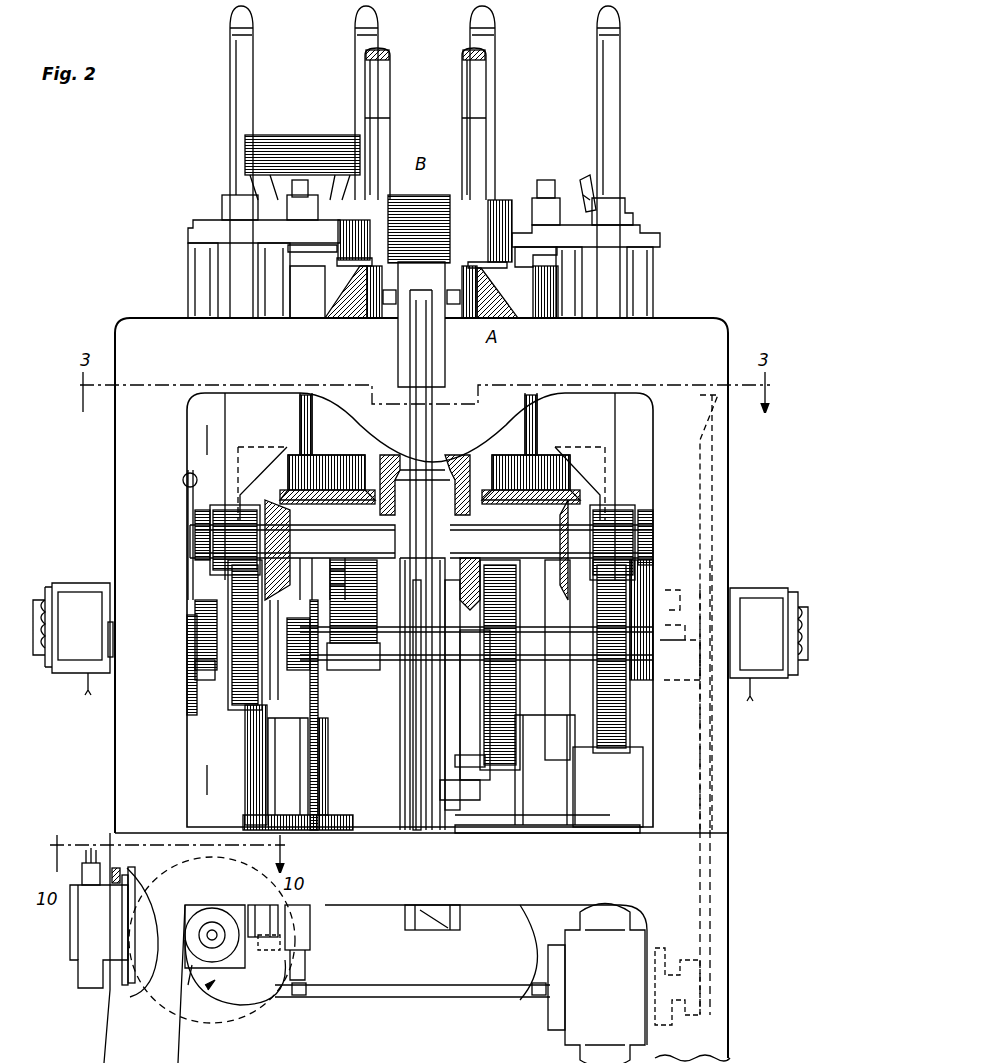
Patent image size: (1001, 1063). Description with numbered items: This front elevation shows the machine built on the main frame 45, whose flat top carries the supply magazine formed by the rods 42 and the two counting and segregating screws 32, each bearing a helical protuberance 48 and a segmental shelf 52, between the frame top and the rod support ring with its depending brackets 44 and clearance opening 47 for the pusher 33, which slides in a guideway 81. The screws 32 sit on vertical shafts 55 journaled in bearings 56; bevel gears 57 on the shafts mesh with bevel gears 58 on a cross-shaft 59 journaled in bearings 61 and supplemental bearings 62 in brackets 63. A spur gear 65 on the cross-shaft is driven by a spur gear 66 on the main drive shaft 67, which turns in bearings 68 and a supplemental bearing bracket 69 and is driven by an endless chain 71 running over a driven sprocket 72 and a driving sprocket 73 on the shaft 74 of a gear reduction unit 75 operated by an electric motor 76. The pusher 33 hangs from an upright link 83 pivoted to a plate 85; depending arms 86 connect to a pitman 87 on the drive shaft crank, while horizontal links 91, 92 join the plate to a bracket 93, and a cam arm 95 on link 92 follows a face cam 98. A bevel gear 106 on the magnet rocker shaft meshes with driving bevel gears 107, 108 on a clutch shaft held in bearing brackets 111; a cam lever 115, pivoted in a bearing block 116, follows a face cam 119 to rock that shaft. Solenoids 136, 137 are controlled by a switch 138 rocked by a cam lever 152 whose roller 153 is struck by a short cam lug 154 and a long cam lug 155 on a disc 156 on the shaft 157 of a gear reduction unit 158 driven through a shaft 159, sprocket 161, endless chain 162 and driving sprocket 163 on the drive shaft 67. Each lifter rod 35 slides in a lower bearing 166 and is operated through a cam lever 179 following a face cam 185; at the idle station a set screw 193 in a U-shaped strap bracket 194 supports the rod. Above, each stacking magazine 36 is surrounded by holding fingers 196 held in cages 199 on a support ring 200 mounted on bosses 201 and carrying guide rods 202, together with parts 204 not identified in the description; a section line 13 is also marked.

The section line 13 is at (205, 436).
The counting and segregating screws 32 is at (310, 312).
The pusher block 33 is at (421, 290).
The lifter rod 35 is at (421, 770).
The stacking magazine 36 is at (278, 125).
The rods 42 is at (373, 85).
The depending brackets 44 is at (388, 312).
The frame 45 is at (120, 476).
The transverse clearance opening 47 is at (445, 240).
The helical protuberance 48 is at (345, 296).
The segmental shelf 52 is at (362, 268).
The shafts 55 is at (322, 250).
The bearings 56 is at (305, 403).
The bevel gears 57 is at (335, 473).
The bevel gears 58 is at (280, 508).
The cross-shaft 59 is at (292, 541).
The bearings 61 is at (195, 530).
The supplemental bearings 62 is at (422, 542).
The brackets 63 is at (232, 445).
The spur gear 65 is at (185, 482).
The spur gear 66 is at (190, 700).
The main drive shaft 67 is at (212, 636).
The bearings 68 is at (645, 688).
The supplemental bearing bracket 69 is at (343, 675).
The endless chain 71 is at (398, 182).
The driven sprocket 72 is at (705, 707).
The driving sprocket 73 is at (710, 952).
The shaft 74 is at (686, 937).
The gear reduction unit 75 is at (615, 978).
The electric motor 76 is at (535, 938).
The guideway 81 is at (396, 358).
The upright link 83 is at (432, 372).
The plate 85 is at (412, 678).
The depending arms 86 is at (432, 610).
The pitman 87 is at (452, 668).
The horizontal link 91 is at (428, 930).
The horizontal link 92 is at (440, 773).
The bracket 93 is at (462, 803).
The cam arm 95 is at (470, 702).
The face cam 98 is at (510, 639).
The bevel gear 106 is at (455, 478).
The driving bevel gear 107 is at (330, 572).
The driving bevel gear 108 is at (476, 592).
The bearing brackets 111 is at (318, 588).
The cam lever 115 is at (566, 660).
The bearing block 116 is at (600, 805).
The face cam 119 is at (630, 639).
The electric solenoid 136 is at (75, 582).
The electric solenoid 137 is at (765, 586).
The double pole electric switch 138 is at (88, 935).
The cam lever 152 is at (132, 983).
The cam roller 153 is at (154, 932).
The short cam lug 154 is at (212, 940).
The long cam lug 155 is at (262, 954).
The rotatable disc 156 is at (225, 995).
The shaft 157 is at (214, 933).
The gear reduction unit 158 is at (199, 984).
The shaft 159 is at (285, 903).
The sprocket 161 is at (300, 917).
The endless chain 162 is at (320, 760).
The driving sprocket 163 is at (300, 670).
The lower bearings 166 is at (328, 792).
The cam lever 179 is at (208, 672).
The face cam 185 is at (258, 639).
The set screw 193 is at (298, 996).
The U-shaped strap iron bracket 194 is at (440, 998).
The holding fingers 196 is at (585, 195).
The cages 199 is at (240, 207).
The support ring 200 is at (195, 232).
The bosses 201 is at (265, 262).
The guide rods 202 is at (240, 46).
The stop 204 is at (298, 185).